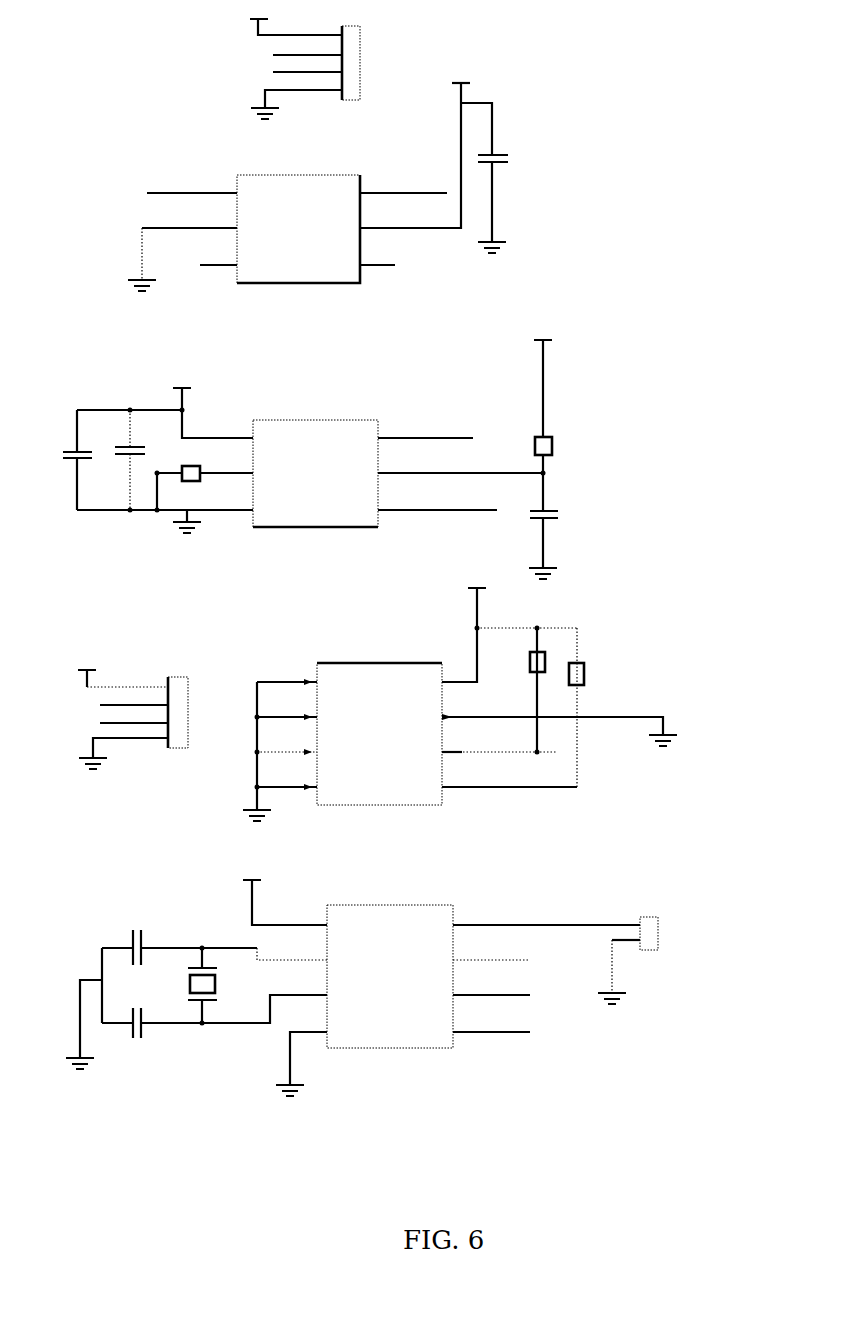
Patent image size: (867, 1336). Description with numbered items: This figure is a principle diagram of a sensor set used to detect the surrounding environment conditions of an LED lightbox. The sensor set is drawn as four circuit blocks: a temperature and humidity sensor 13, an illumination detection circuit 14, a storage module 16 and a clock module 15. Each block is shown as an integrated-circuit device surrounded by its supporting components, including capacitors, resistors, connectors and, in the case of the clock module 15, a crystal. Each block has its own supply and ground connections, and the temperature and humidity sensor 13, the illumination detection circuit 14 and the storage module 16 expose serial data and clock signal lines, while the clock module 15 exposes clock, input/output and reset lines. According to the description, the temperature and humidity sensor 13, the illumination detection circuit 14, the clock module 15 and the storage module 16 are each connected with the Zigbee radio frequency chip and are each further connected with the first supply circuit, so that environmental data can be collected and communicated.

The temperature and humidity sensor 13 is at (548, 157).
The illumination detection circuit 14 is at (583, 383).
The storage module 16 is at (650, 677).
The clock module 15 is at (677, 967).